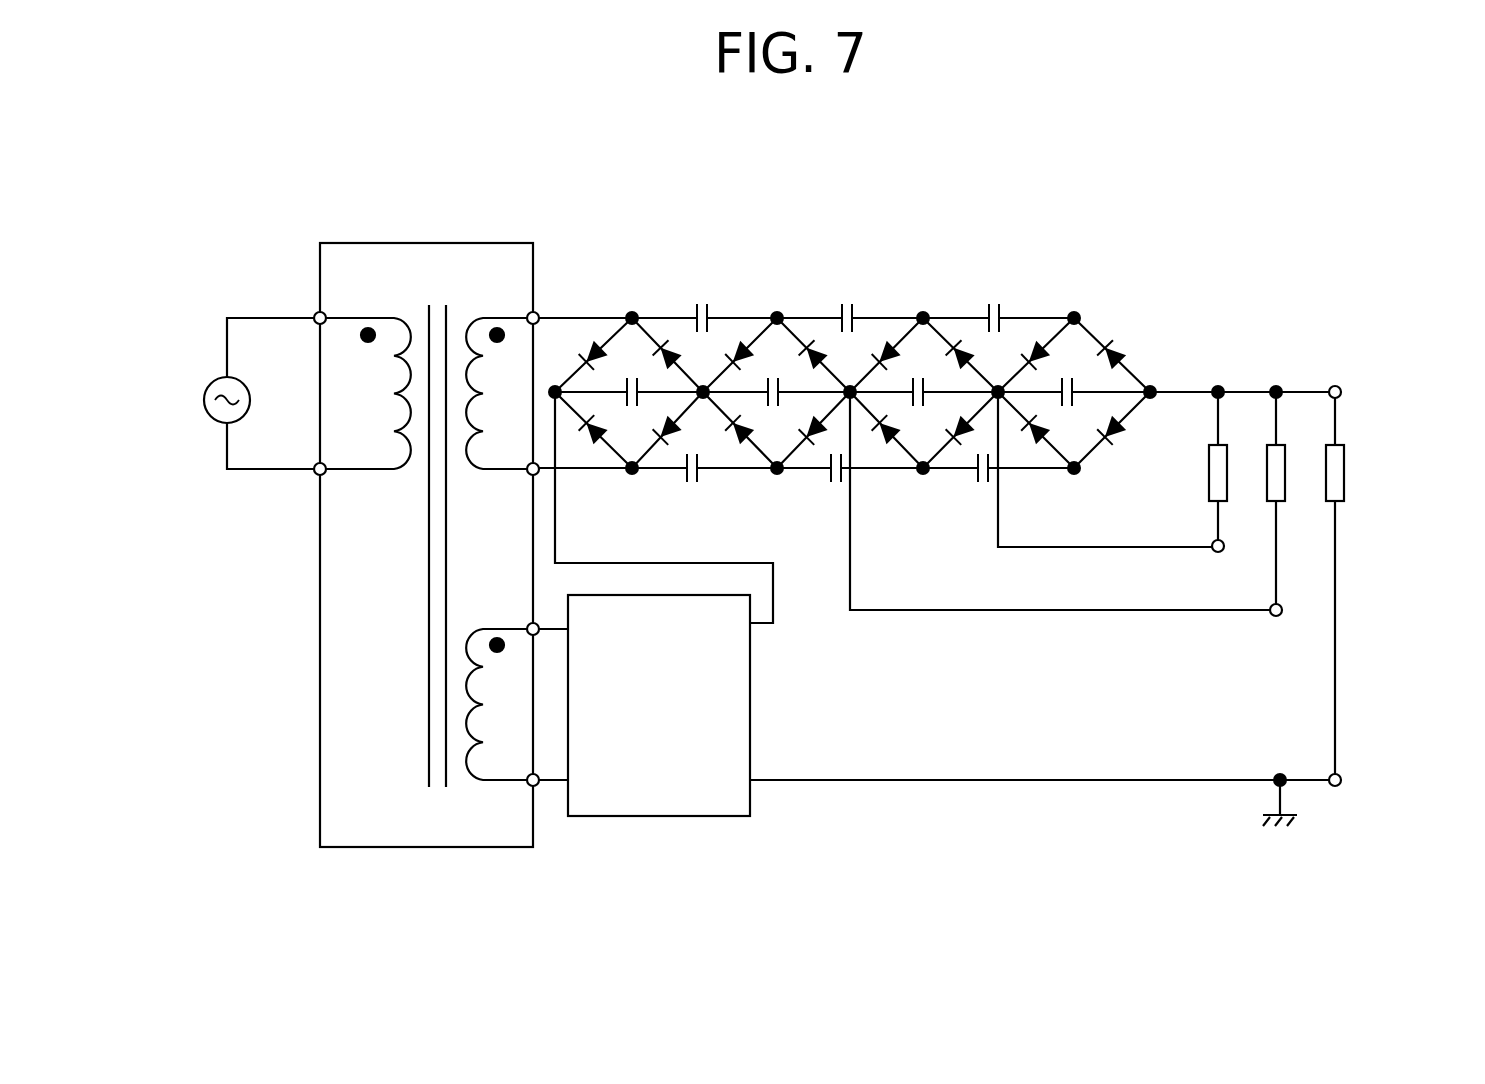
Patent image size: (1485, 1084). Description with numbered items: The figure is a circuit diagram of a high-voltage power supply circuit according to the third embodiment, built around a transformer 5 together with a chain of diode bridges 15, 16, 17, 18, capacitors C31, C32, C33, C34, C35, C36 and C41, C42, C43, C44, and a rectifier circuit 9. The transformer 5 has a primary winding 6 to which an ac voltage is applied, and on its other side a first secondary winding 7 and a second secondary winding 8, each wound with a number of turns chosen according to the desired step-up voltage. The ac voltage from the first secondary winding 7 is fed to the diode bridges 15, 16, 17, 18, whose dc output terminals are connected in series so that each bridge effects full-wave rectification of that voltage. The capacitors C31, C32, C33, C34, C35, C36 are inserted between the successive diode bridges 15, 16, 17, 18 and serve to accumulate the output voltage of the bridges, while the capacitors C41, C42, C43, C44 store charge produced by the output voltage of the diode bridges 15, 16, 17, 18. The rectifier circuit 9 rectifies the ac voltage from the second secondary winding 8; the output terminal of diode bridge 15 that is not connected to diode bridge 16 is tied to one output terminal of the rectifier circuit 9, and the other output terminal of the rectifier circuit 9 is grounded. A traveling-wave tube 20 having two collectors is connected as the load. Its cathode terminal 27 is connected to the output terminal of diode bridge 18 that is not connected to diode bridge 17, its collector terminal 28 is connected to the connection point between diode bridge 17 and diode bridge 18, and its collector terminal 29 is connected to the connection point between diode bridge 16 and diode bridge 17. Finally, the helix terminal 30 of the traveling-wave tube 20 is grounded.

The transformer 5 is at (330, 243).
The primary winding 6 is at (377, 473).
The first secondary winding 7 is at (490, 318).
The second secondary winding 8 is at (490, 784).
The rectifier circuit 9 is at (707, 818).
The diode bridge 15 is at (598, 318).
The diode bridge 16 is at (811, 316).
The diode bridge 17 is at (906, 316).
The diode bridge 18 is at (1108, 321).
The traveling-wave tube 20 is at (1352, 455).
The cathode terminal 27 is at (1334, 386).
The collector terminal 28 is at (1216, 552).
The collector terminal 29 is at (1276, 617).
The helix terminal 30 is at (1340, 784).
The capacitor C31 is at (708, 312).
The capacitor C32 is at (693, 482).
The capacitor C33 is at (853, 312).
The capacitor C34 is at (836, 472).
The capacitor C35 is at (1000, 312).
The capacitor C36 is at (982, 474).
The capacitor C41 is at (652, 400).
The capacitor C42 is at (780, 402).
The capacitor C43 is at (925, 402).
The capacitor C44 is at (1075, 402).